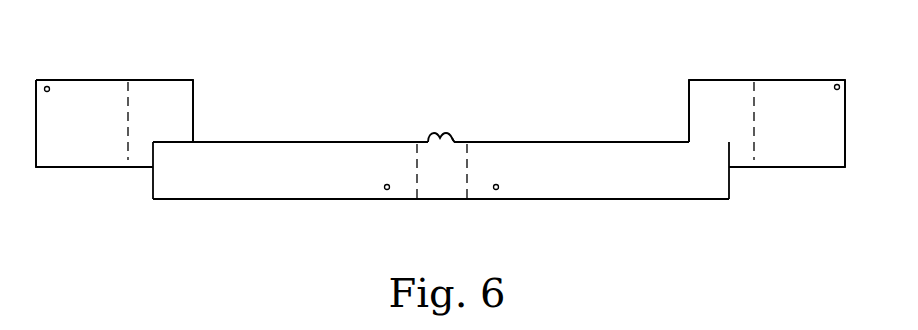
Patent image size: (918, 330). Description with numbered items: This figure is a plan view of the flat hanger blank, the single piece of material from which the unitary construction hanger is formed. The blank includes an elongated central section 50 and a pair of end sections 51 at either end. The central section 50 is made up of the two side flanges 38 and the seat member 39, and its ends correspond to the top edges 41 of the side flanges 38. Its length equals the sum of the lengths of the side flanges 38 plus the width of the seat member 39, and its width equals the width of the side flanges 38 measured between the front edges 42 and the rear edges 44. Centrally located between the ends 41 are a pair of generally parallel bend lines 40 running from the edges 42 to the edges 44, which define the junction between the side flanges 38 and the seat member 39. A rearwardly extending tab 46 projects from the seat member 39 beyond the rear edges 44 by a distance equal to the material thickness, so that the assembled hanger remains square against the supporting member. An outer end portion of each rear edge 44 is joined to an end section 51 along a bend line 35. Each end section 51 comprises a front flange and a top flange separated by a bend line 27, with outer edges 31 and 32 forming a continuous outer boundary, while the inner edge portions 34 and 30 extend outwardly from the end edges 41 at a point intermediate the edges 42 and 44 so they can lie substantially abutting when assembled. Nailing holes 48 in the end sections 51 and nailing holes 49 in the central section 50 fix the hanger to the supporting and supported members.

The bend lines 27 is at (128, 110).
The inner edges 30 is at (68, 167).
The outer edges 31 is at (76, 80).
The outer edges 32 is at (162, 80).
The upper inner edge portions 34 is at (140, 167).
The bend lines 35 is at (183, 143).
The side flanges 38 is at (334, 178).
The seat member 39 is at (455, 147).
The bend lines 40 is at (417, 150).
The top edges 41 is at (153, 186).
The front edges 42 is at (272, 199).
The rear edges 44 is at (283, 142).
The tab 46 is at (433, 132).
The nailing holes 48 is at (47, 86).
The nailing holes 49 is at (388, 190).
The central section 50 is at (335, 138).
The end sections 51 is at (36, 133).